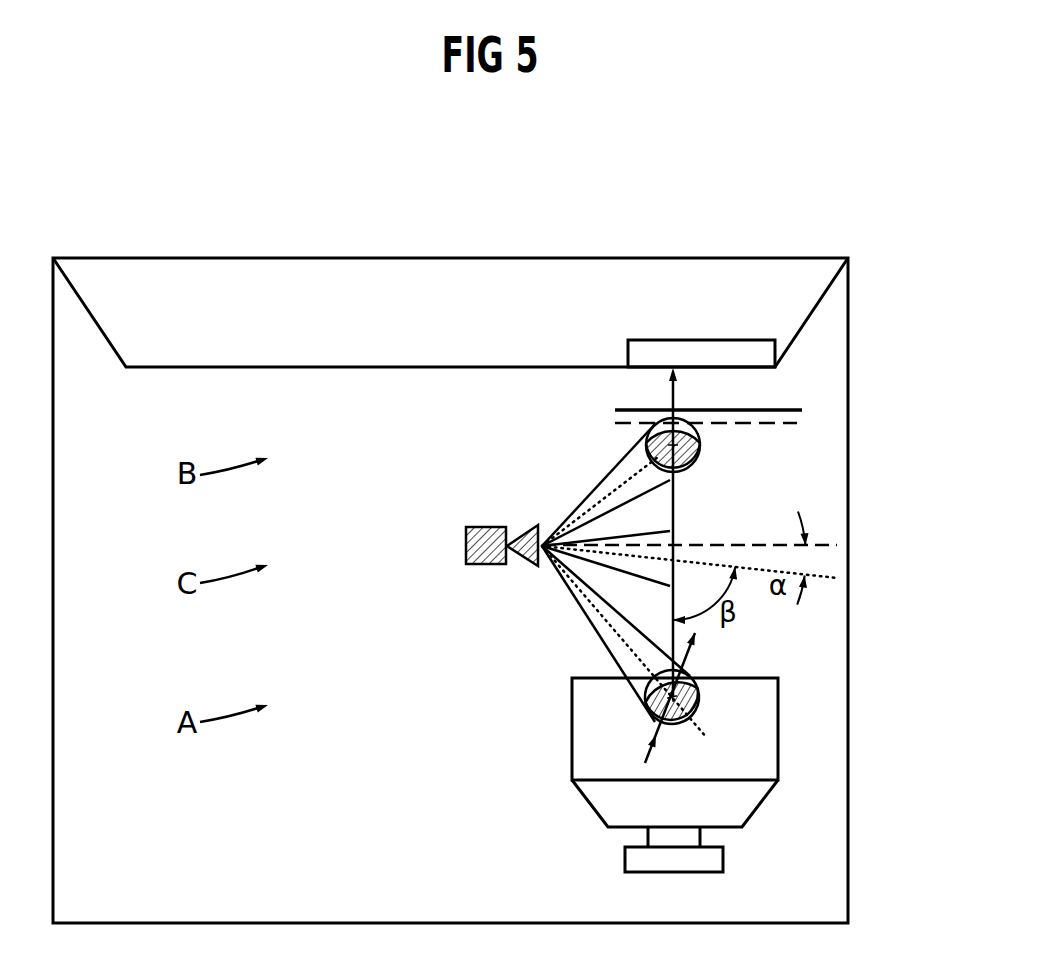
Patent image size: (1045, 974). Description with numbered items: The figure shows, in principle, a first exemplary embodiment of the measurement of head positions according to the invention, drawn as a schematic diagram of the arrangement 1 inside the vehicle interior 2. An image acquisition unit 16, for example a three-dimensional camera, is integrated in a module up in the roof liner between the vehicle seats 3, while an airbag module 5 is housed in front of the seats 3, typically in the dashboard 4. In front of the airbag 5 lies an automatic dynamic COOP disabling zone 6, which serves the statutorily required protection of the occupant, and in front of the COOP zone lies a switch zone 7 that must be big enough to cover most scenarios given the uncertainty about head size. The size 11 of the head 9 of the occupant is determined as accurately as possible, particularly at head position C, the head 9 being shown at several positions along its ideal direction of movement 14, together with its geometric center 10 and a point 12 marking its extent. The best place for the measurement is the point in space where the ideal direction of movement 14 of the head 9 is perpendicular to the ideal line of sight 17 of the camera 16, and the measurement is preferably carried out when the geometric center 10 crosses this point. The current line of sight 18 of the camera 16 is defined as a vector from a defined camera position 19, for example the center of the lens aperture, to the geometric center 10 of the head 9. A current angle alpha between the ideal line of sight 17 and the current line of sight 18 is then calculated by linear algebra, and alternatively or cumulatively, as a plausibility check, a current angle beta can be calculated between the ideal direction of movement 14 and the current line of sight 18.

The optical analysis device 1 is at (450, 228).
The measurement chamber 2 is at (386, 690).
The vehicle seat 3 is at (587, 737).
The dashboard 4 is at (422, 352).
The airbag module 5 is at (677, 355).
The automatic dynamic COOP disabling zone 6 is at (787, 407).
The switch zone 7 is at (787, 429).
The head 9 is at (702, 447).
The geometric center 10 is at (622, 458).
The size 11 is at (682, 676).
The focal point 12 is at (650, 421).
The ideal direction of movement 14 is at (674, 497).
The image acquisition unit 16 is at (466, 550).
The ideal line of sight 17 is at (831, 544).
The current line of sight 18 is at (825, 579).
The defined camera position 19 is at (536, 517).